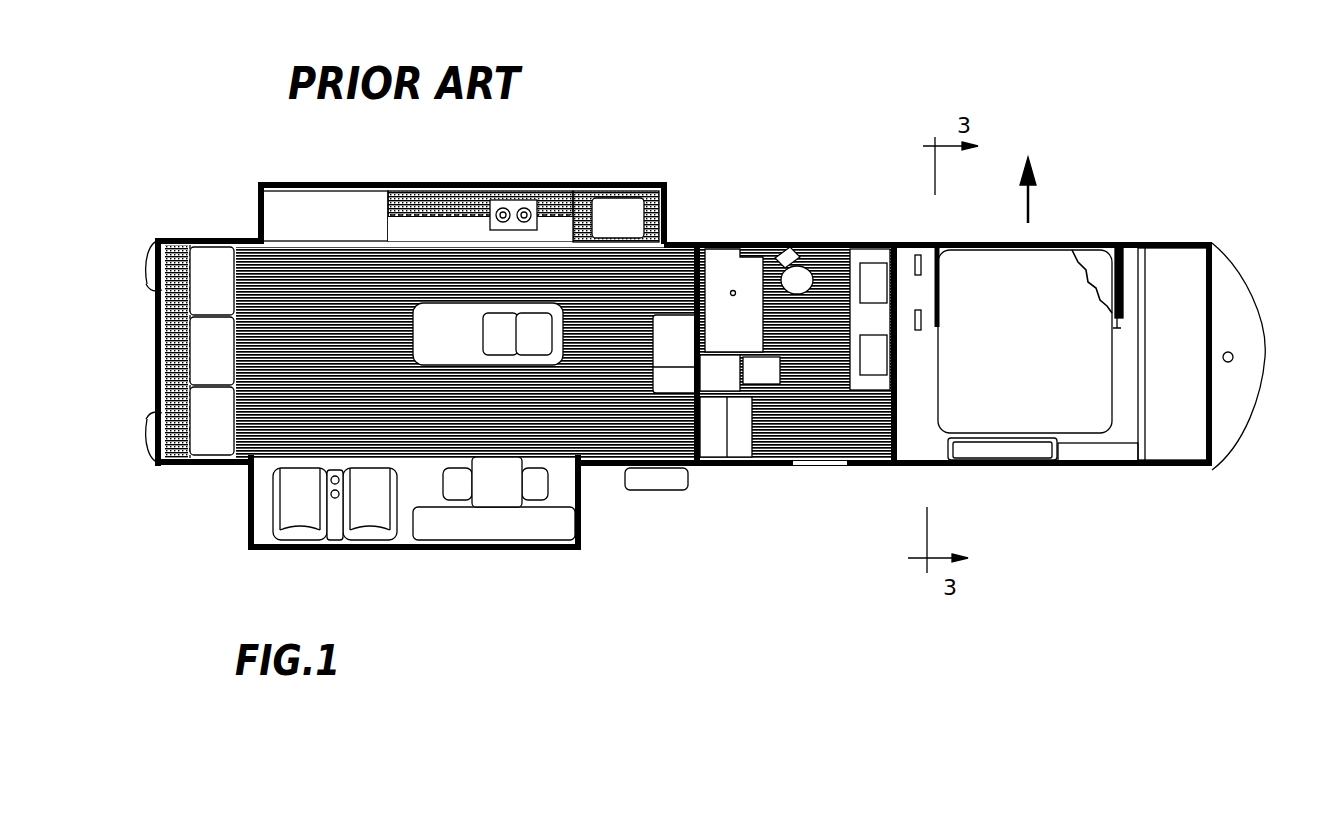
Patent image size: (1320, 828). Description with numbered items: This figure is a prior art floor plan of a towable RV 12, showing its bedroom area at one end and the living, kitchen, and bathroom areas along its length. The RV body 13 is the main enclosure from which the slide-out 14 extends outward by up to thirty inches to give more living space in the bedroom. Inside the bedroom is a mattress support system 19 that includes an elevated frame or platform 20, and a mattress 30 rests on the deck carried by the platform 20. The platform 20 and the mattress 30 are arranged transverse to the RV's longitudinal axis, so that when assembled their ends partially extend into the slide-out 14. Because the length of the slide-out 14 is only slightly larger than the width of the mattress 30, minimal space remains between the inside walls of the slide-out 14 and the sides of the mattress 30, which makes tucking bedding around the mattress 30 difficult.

The towable RV 12 is at (248, 164).
The RV body 13 is at (838, 228).
The slide-out 14 is at (1114, 234).
The mattress support system 19 is at (1046, 262).
The platform 20 is at (1110, 277).
The mattress 30 is at (1040, 384).